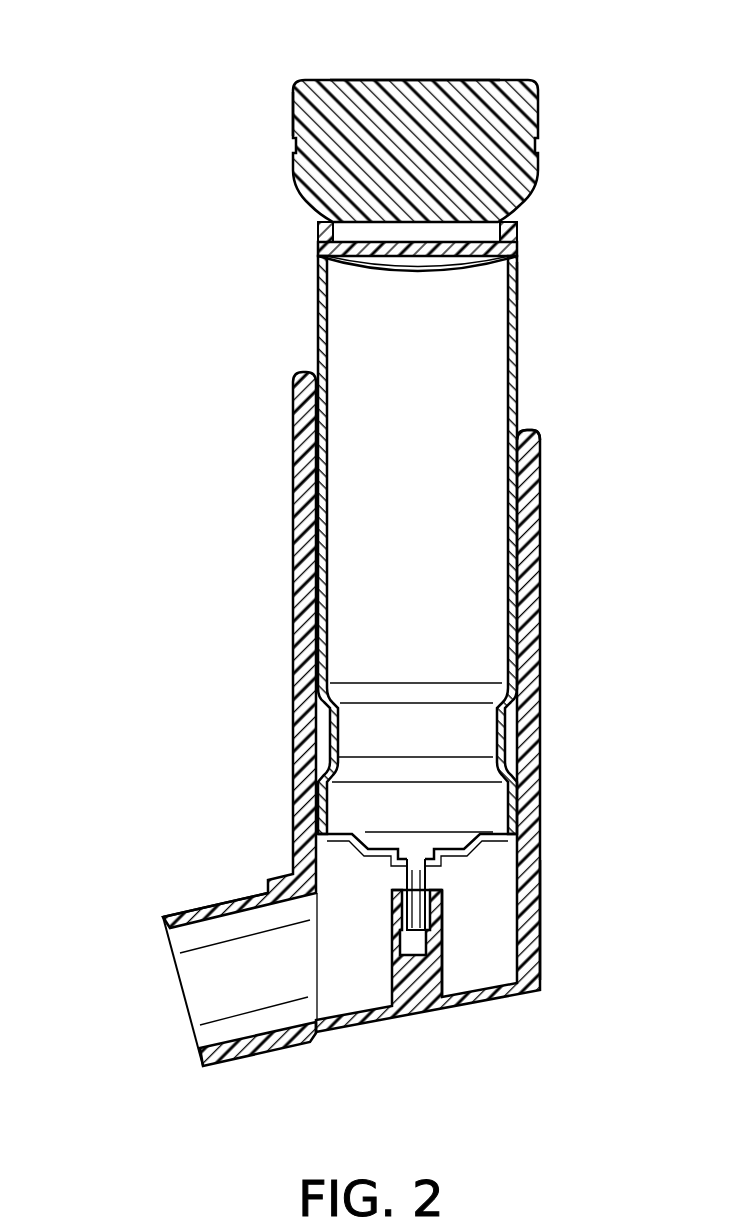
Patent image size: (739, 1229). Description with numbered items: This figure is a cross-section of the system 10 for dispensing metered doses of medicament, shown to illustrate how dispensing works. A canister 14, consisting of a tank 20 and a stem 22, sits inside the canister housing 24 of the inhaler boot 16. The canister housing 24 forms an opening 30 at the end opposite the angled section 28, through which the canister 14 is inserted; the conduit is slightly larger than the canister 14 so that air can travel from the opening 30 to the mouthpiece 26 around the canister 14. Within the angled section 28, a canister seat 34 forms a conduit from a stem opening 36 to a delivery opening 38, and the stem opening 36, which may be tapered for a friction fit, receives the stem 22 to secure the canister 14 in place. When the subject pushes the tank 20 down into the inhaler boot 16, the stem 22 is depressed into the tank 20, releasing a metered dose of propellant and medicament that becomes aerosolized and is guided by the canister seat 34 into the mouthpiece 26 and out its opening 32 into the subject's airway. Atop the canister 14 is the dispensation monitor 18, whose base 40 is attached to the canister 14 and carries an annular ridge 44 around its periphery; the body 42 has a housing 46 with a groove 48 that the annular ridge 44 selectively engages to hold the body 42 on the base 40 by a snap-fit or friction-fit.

The system 10 is at (124, 210).
The canister 14 is at (517, 343).
The inhaler boot 16 is at (293, 700).
The dispensation monitor 18 is at (540, 161).
The tank 20 is at (517, 282).
The stem 22 is at (412, 880).
The canister housing 24 is at (528, 548).
The mouthpiece 26 is at (205, 905).
The angled section 28 is at (530, 879).
The opening 30 is at (518, 428).
The opening 32 is at (180, 996).
The canister seat 34 is at (438, 947).
The stem opening 36 is at (423, 887).
The delivery opening 38 is at (397, 947).
The base 40 is at (330, 260).
The body 42 is at (328, 78).
The annular ridge 44 is at (322, 232).
The housing 46 is at (292, 98).
The groove 48 is at (516, 228).